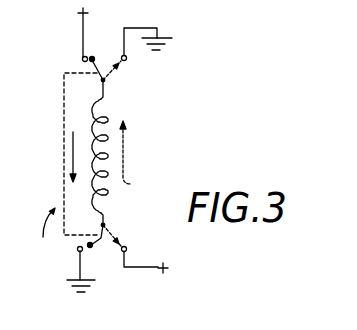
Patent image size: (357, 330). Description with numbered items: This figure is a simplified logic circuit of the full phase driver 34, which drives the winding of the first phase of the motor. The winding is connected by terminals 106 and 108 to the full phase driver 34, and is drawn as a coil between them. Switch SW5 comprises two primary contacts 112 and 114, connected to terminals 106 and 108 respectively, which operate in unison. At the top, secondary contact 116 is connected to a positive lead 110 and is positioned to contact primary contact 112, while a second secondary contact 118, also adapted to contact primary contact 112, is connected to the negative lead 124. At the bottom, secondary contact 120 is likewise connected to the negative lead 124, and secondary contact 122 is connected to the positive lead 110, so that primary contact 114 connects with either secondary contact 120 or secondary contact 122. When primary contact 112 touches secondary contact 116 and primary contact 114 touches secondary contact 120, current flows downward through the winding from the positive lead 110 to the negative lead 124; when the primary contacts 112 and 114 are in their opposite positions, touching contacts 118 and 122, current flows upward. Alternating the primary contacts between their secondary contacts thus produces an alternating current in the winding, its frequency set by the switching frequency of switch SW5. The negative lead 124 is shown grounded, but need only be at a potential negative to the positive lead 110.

The positive lead 110 is at (82, 32).
The secondary contact 116 is at (82, 58).
The primary contact 112 is at (93, 70).
The terminal 106 is at (108, 83).
The second secondary contact 118 is at (127, 61).
The negative lead 124 is at (157, 31).
The full phase driver 34 is at (152, 123).
The terminal 108 is at (110, 216).
The primary contact 114 is at (97, 245).
The secondary contact 120 is at (78, 252).
The secondary contact 122 is at (127, 249).
The switch SW5 is at (58, 233).